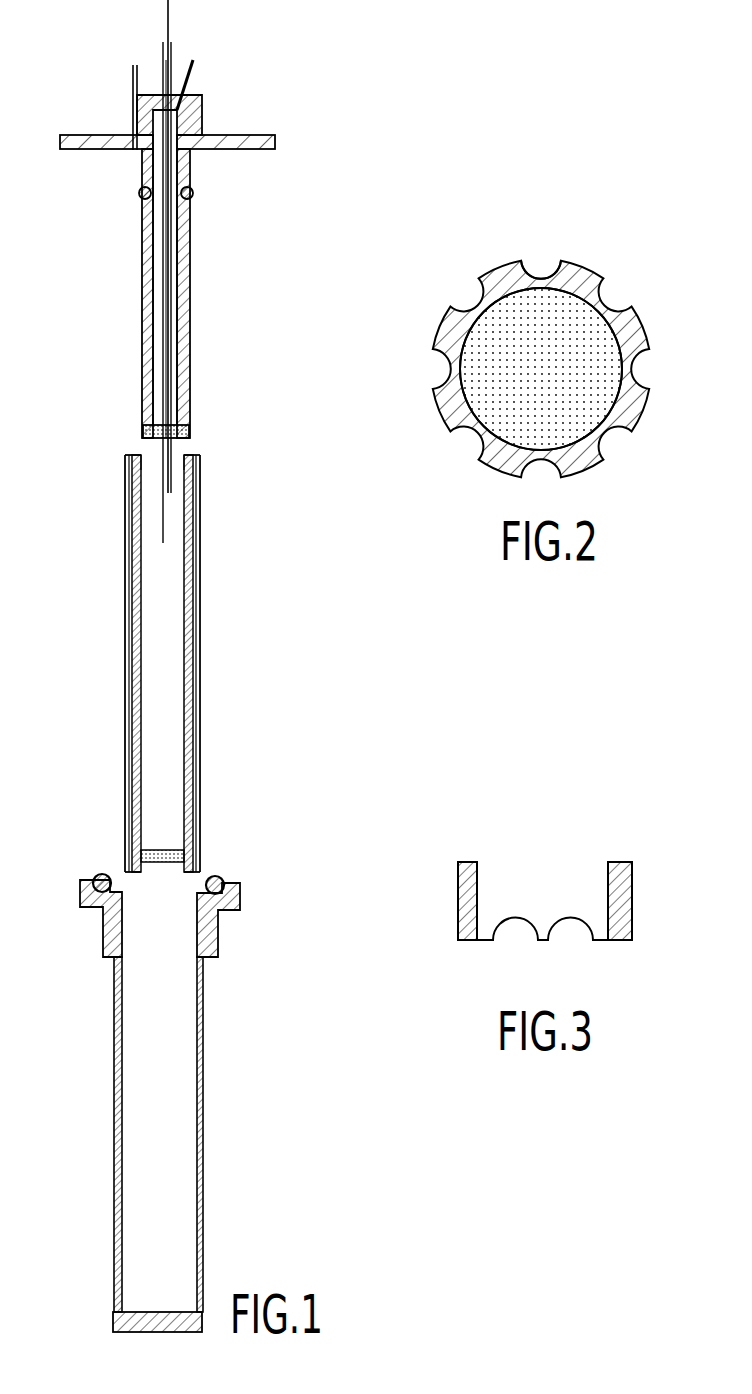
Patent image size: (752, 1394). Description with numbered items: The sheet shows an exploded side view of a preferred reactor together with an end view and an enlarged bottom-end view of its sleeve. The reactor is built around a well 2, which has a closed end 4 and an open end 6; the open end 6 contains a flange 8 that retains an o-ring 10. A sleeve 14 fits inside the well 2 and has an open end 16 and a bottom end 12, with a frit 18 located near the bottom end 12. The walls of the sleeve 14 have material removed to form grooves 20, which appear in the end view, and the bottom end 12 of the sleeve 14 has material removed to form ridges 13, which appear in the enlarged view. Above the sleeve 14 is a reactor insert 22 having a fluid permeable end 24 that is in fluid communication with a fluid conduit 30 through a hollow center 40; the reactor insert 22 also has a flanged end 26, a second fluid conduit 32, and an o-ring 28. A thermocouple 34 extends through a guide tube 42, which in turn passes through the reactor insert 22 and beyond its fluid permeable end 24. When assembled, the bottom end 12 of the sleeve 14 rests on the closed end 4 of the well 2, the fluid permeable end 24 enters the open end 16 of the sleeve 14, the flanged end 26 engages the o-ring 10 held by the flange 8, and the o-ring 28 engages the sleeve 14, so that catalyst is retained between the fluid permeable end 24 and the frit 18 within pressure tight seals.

In FIG. 1, the well 2 is at (202, 1118).
In FIG. 1, the closed end 4 is at (130, 1335).
In FIG. 1, the open end 6 is at (162, 910).
In FIG. 1, the flange 8 is at (240, 902).
In FIG. 1, the o-ring 10 is at (220, 878).
In FIG. 1, the bottom end 12 is at (148, 864).
In FIG. 3, the ridges 13 is at (568, 938).
In FIG. 1, the sleeve 14 is at (202, 653).
In FIG. 2, the sleeve 14 is at (640, 320).
In FIG. 3, the sleeve 14 is at (617, 870).
In FIG. 1, the open end 16 is at (180, 468).
In FIG. 1, the frit 18 is at (137, 853).
In FIG. 2, the frit 18 is at (560, 395).
In FIG. 1, the grooves 20 is at (202, 542).
In FIG. 2, the grooves 20 is at (540, 265).
In FIG. 1, the reactor insert 22 is at (183, 282).
In FIG. 1, the fluid permeable end 24 is at (180, 433).
In FIG. 1, the flanged end 26 is at (273, 140).
In FIG. 1, the o-ring 28 is at (195, 195).
In FIG. 1, the fluid conduit 30 is at (193, 75).
In FIG. 1, the fluid conduit 32 is at (132, 100).
In FIG. 1, the thermocouple 34 is at (168, 20).
In FIG. 1, the hollow center 40 is at (175, 353).
In FIG. 1, the guide tube 42 is at (173, 42).